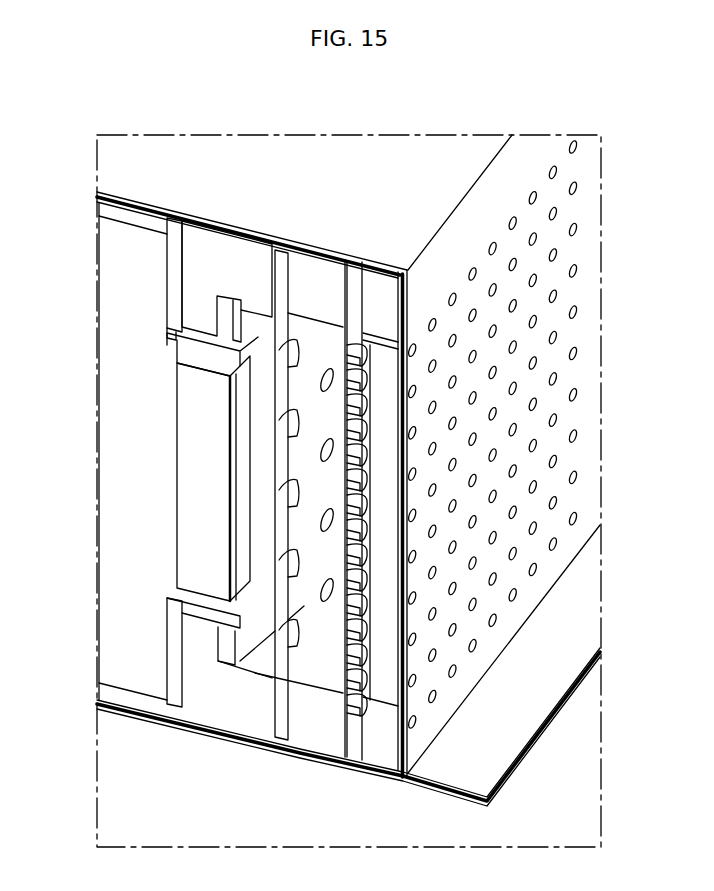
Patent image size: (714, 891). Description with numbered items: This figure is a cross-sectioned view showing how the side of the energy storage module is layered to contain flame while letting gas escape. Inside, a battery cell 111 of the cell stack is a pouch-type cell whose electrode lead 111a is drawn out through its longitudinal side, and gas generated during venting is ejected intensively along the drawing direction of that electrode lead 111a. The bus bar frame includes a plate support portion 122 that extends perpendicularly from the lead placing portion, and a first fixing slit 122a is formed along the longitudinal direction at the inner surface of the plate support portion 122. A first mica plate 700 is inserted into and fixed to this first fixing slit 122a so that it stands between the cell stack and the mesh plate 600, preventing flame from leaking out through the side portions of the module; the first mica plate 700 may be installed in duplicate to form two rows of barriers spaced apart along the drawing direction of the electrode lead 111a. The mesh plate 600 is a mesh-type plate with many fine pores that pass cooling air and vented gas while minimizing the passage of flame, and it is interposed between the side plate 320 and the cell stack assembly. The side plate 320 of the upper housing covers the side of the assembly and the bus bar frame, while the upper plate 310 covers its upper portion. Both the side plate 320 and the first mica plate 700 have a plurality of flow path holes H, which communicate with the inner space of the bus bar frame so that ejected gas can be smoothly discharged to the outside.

The upper plate 310 is at (320, 150).
The side plate 320 is at (525, 433).
The flow path hole H is at (576, 230).
The mesh plate 600 is at (388, 666).
The battery cell 111 is at (135, 678).
The electrode lead 111a is at (203, 468).
The plate support portion 122 is at (205, 263).
The first fixing slit 122a is at (272, 717).
The first mica plate 700 is at (317, 732).